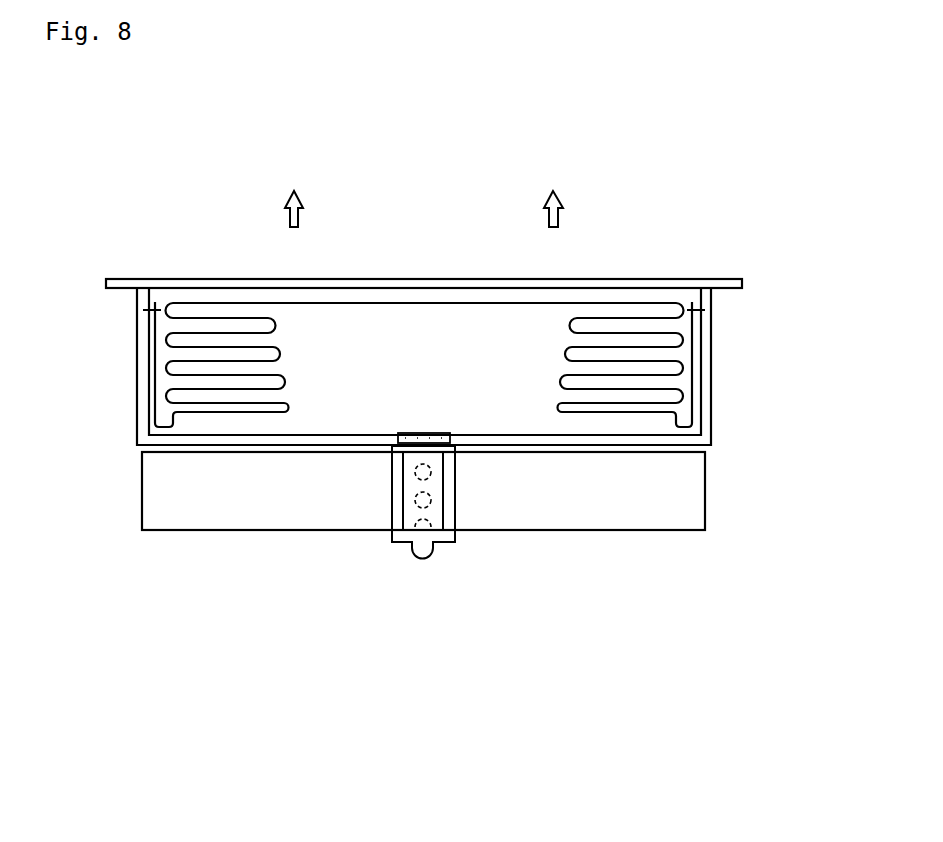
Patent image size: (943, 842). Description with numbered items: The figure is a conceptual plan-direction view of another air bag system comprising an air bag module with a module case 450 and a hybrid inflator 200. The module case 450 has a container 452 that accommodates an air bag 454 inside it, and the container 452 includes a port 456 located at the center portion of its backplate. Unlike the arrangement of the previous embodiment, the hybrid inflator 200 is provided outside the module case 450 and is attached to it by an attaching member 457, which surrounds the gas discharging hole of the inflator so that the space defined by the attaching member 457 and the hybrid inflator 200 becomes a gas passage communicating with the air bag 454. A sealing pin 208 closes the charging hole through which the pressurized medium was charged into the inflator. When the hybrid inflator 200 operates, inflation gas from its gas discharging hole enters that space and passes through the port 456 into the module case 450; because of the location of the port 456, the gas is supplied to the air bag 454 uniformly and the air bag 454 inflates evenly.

The hybrid inflator 200 is at (632, 512).
The module case 450 is at (608, 256).
The container 452 is at (711, 410).
The air bag 454 is at (163, 397).
The port 456 is at (427, 435).
The attaching member 457 is at (443, 535).
The sealing pin 208 is at (415, 503).